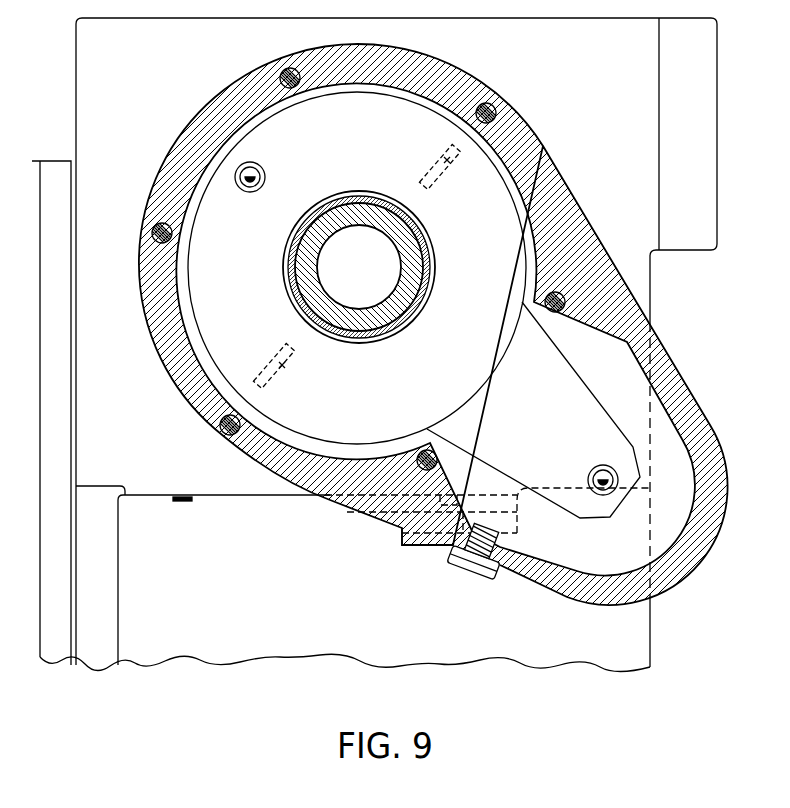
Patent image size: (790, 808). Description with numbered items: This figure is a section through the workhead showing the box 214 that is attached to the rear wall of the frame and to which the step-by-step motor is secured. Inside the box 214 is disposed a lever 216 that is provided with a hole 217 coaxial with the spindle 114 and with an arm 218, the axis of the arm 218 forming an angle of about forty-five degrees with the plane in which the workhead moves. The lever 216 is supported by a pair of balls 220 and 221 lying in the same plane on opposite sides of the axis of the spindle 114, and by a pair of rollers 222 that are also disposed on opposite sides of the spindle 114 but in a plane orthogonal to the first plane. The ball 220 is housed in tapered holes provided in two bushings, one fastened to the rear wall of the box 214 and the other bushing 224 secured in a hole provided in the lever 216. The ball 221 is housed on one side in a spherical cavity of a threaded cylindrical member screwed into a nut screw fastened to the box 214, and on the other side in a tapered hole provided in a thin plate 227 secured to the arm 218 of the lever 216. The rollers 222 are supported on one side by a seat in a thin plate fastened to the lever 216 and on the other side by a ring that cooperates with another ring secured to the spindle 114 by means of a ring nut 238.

The spindle 114 is at (418, 264).
The box 214 is at (572, 202).
The lever 216 is at (452, 110).
The hole 217 is at (403, 322).
The arm 218 is at (578, 392).
The ball 220 is at (262, 168).
The ball 221 is at (591, 463).
The rollers 222 is at (285, 367).
The bushing 224 is at (248, 193).
The thin plate 227 is at (622, 456).
The ring nut 238 is at (366, 199).